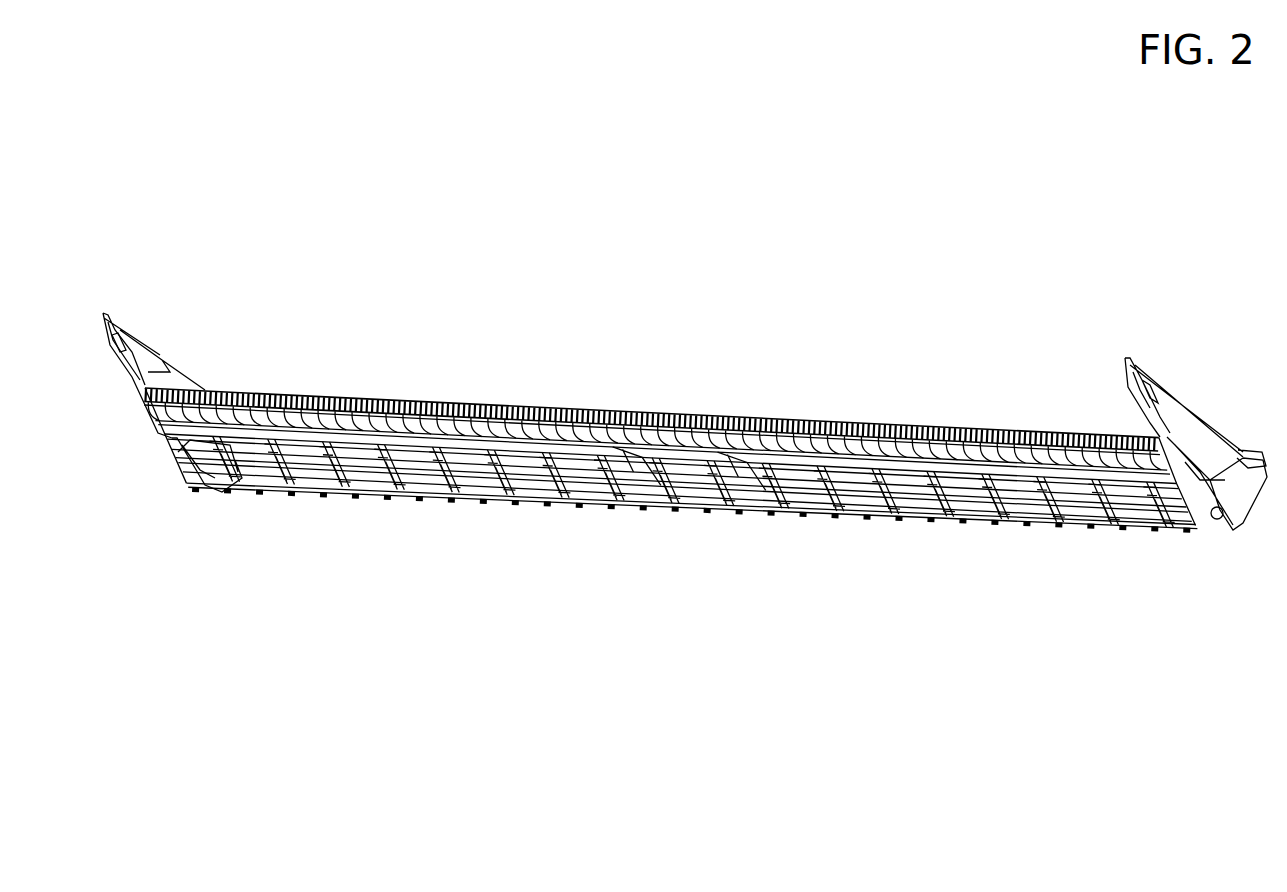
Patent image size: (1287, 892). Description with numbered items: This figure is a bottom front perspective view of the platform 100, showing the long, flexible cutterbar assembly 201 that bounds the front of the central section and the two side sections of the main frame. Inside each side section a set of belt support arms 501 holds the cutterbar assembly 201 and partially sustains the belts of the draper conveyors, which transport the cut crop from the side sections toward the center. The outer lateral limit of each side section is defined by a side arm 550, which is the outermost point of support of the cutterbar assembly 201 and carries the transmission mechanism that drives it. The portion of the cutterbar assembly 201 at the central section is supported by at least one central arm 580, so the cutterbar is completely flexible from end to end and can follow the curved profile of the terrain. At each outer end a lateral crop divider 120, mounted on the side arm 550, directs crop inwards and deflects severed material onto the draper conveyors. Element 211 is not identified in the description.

The platform 100 is at (682, 315).
The lateral crop divider 120 is at (139, 357).
The cutterbar assembly 201 is at (339, 388).
The draper deck 211 is at (402, 424).
The belt support arm 501 is at (270, 442).
The side arm 550 is at (172, 438).
The central arm 580 is at (632, 457).